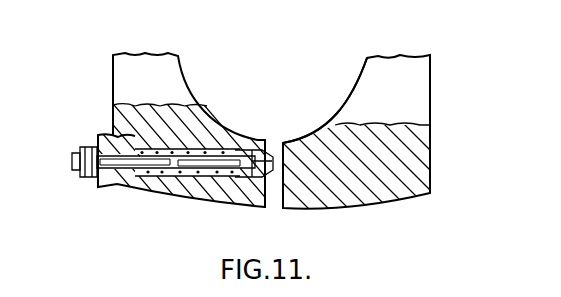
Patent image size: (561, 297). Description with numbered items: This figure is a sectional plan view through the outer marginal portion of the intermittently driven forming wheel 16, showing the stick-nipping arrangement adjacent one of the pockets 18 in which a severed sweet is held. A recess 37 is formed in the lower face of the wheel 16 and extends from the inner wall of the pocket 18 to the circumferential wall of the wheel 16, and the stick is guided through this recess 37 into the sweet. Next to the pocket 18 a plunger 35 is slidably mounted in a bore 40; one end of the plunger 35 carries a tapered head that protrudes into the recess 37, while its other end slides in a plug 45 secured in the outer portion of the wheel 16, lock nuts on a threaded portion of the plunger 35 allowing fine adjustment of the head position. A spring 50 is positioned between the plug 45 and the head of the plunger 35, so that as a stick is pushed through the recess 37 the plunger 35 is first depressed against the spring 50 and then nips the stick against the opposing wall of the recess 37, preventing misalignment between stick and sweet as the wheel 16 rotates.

The forming wheel 16 is at (405, 92).
The pocket 18 is at (342, 105).
The plunger 35 is at (252, 150).
The recess 37 is at (284, 197).
The bore 40 is at (223, 177).
The plug 45 is at (103, 140).
The spring 50 is at (160, 180).